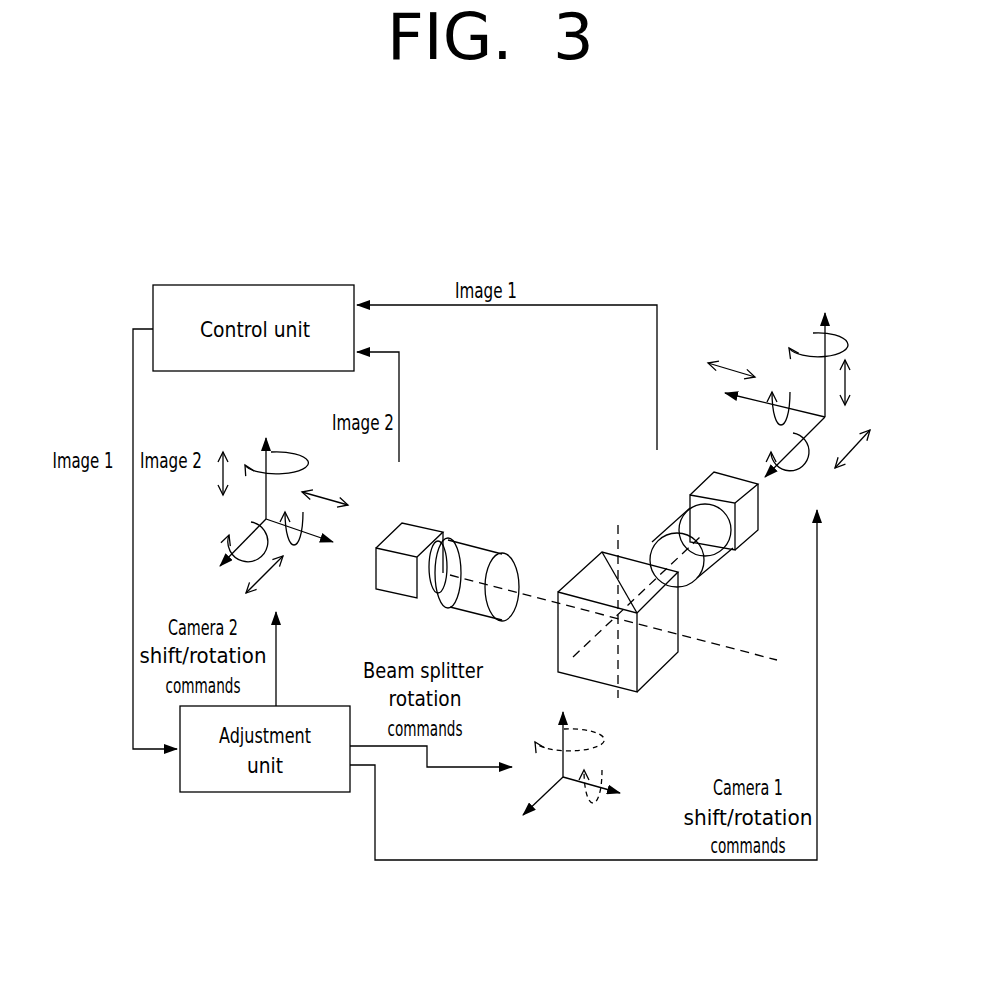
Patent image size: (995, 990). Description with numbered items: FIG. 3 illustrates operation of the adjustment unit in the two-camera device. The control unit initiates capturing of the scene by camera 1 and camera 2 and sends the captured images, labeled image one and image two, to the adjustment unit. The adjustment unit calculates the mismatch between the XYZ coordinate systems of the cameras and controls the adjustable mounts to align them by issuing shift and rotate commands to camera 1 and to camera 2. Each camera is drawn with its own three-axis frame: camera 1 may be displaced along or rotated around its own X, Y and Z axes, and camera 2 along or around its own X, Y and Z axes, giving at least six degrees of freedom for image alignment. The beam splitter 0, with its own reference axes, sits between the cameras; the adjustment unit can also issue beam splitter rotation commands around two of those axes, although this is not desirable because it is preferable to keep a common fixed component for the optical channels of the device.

The camera 1 is at (741, 430).
The camera 2 is at (346, 505).
The beam splitter 0 is at (613, 674).